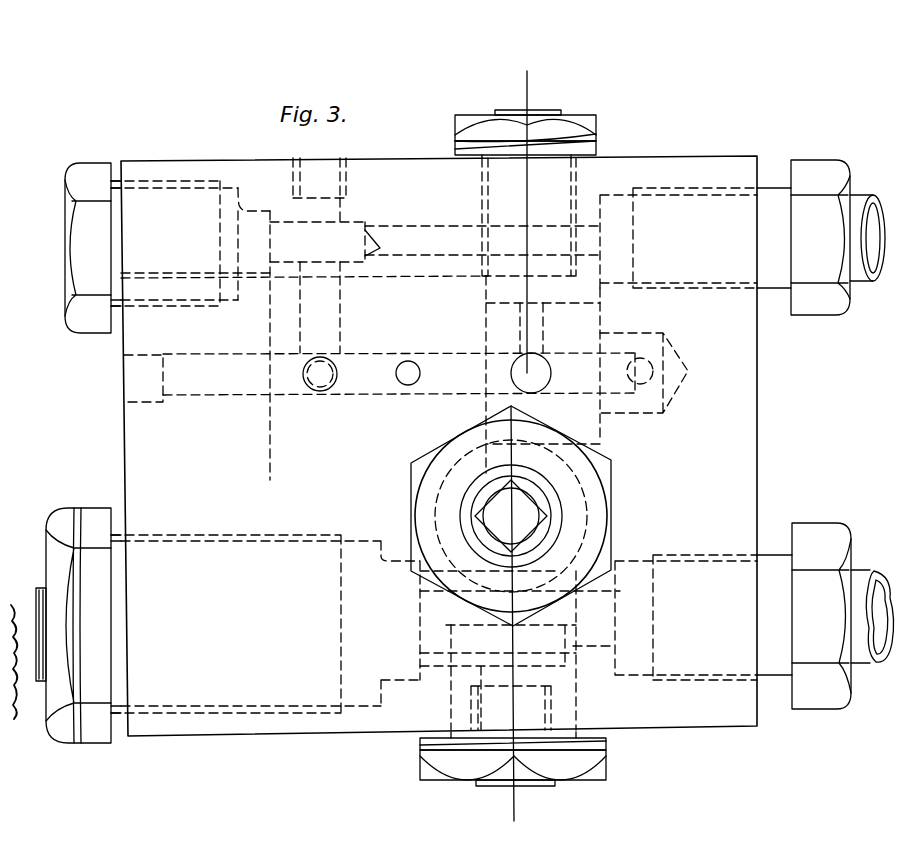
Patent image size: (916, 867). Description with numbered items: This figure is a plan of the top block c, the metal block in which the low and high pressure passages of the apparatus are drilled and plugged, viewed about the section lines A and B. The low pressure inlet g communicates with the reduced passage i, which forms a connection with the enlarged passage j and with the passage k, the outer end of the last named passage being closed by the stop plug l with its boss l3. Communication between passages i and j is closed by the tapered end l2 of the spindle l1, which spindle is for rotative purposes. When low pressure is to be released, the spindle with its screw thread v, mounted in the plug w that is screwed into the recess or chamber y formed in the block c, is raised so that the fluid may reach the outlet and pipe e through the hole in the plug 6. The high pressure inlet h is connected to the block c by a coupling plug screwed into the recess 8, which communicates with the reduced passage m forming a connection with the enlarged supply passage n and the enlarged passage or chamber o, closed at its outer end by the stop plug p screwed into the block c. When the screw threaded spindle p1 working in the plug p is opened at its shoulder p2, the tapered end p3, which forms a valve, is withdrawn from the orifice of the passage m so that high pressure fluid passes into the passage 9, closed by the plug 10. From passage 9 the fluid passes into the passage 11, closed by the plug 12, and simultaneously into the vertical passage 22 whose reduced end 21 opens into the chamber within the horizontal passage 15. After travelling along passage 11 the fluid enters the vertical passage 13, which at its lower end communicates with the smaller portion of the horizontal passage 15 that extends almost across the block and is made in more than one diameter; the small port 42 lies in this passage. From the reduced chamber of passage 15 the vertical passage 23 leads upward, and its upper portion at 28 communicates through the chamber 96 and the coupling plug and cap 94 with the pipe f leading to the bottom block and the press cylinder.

The top block c is at (138, 163).
The section line A is at (853, 363).
The section line B is at (525, 446).
The top cap nut 94 is at (525, 136).
The pipe f is at (542, 101).
The plug 6 is at (513, 756).
The outlet pipe e is at (535, 775).
The stop plug p is at (87, 238).
The screw threaded spindle p1 is at (282, 258).
The plug shoulder p2 is at (110, 308).
The tapered end p3 is at (358, 252).
The enlarged passage or chamber o is at (222, 185).
The enlarged supply passage n is at (317, 242).
The reduced passage m is at (433, 248).
The plug 10 is at (322, 169).
The passage 9 is at (320, 297).
The chamber 96 is at (541, 315).
The passage 28 is at (530, 325).
The vertical passage 23 is at (545, 364).
The plug 12 is at (137, 342).
The passage 11 is at (183, 367).
The reduced end 21 is at (295, 368).
The vertical high pressure passage 22 is at (318, 382).
The small port 42 is at (394, 370).
The vertical passage 13 is at (642, 368).
The horizontal passage 15 is at (673, 342).
The recess 8 is at (678, 241).
The recess or chamber y is at (677, 180).
The high pressure inlet h is at (850, 270).
The plug w is at (520, 495).
The screw thread v is at (458, 513).
The stop plug l is at (83, 625).
The spindle l1 is at (468, 645).
The tapered end l2 is at (562, 598).
The nut boss l3 is at (33, 580).
The reduced passage i is at (562, 640).
The enlarged passage j is at (430, 653).
The passage k is at (355, 692).
The low pressure inlet g is at (622, 667).